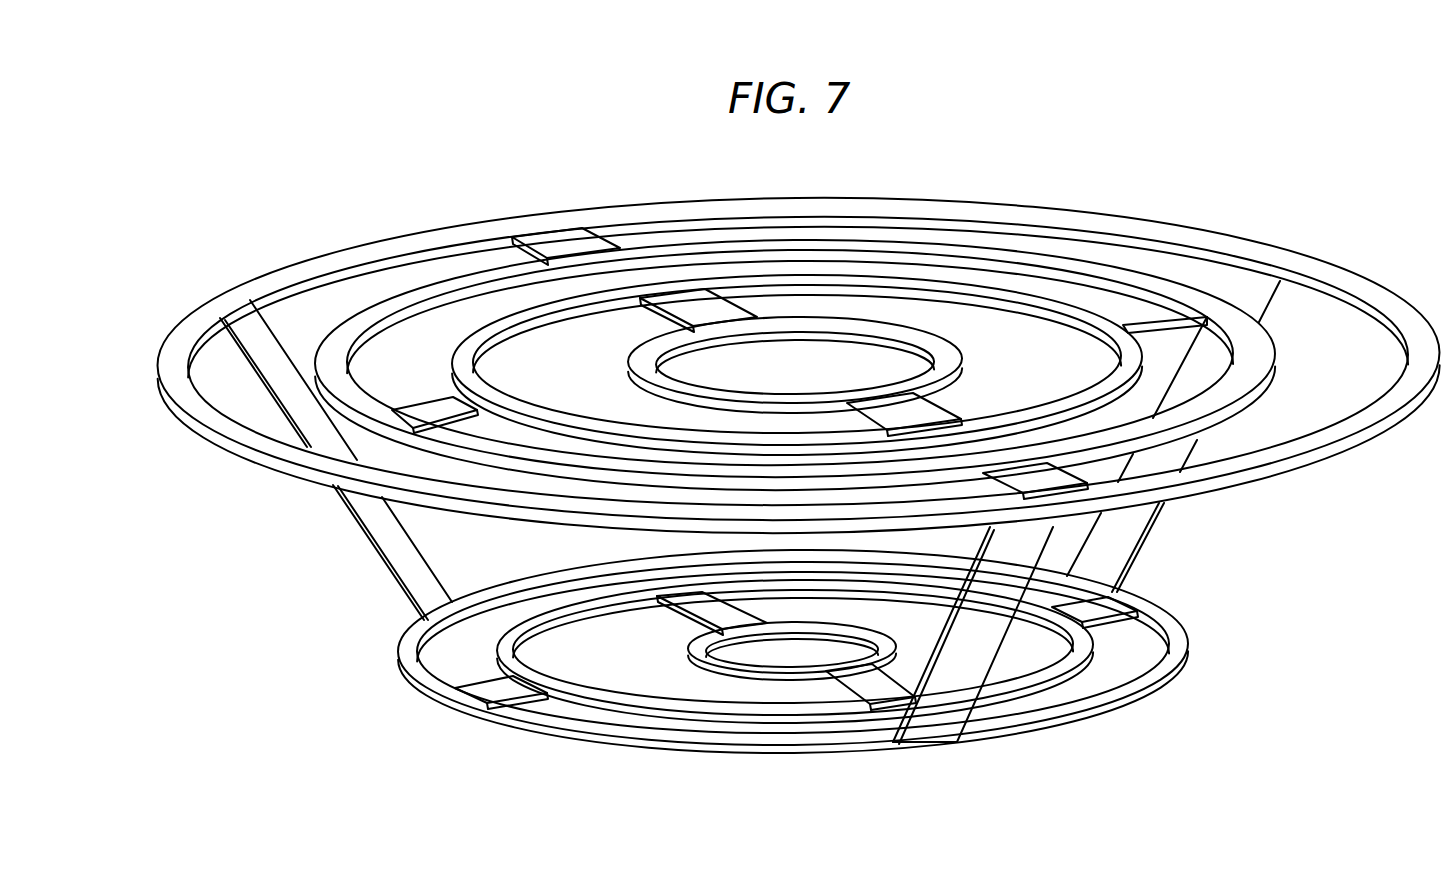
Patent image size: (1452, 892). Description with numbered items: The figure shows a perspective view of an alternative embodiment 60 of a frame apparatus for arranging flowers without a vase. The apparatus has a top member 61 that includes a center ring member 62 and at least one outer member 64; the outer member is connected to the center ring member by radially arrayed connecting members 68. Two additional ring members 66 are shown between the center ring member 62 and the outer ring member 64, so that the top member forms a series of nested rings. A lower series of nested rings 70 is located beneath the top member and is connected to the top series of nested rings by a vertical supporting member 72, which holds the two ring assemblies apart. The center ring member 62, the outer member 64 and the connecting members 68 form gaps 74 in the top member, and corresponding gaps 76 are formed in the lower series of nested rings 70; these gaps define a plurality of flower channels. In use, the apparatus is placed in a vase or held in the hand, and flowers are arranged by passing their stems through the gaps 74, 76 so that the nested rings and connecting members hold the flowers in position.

The alternative embodiment 60 is at (377, 715).
The top member 61 is at (173, 355).
The center ring member 62 is at (785, 320).
The outer member 64 is at (1127, 222).
The additional ring members 66 is at (465, 350).
The connecting members 68 is at (552, 237).
The lower series of nested rings 70 is at (412, 660).
The vertical supporting member 72 is at (375, 523).
The gaps 74 is at (880, 352).
The gaps 76 is at (752, 650).